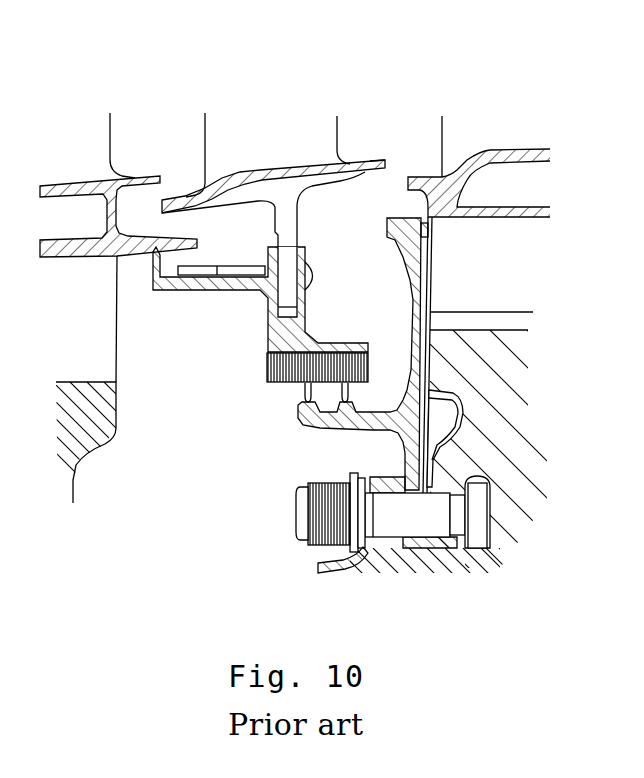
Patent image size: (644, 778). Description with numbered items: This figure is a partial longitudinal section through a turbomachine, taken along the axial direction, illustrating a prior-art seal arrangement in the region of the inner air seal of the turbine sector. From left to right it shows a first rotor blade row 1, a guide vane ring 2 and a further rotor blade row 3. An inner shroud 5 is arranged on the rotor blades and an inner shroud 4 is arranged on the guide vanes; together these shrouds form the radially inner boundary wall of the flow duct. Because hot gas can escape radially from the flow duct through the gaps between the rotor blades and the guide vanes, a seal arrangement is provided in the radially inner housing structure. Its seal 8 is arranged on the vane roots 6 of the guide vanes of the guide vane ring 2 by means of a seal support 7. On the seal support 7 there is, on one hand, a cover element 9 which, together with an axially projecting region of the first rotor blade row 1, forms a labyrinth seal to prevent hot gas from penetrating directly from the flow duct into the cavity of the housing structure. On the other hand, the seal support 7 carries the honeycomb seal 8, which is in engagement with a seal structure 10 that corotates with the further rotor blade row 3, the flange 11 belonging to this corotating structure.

The first rotor blade row 1 is at (78, 130).
The guide vane ring 2 is at (278, 130).
The further rotor blade row 3 is at (485, 130).
The inner shroud 4 is at (382, 153).
The inner shroud 5 is at (142, 160).
The vane root 6 is at (290, 235).
The seal support 7 is at (278, 331).
The honeycomb seal 8 is at (278, 371).
The cover element 9 is at (217, 268).
The seal structure 10 is at (367, 430).
The flange 11 is at (443, 483).